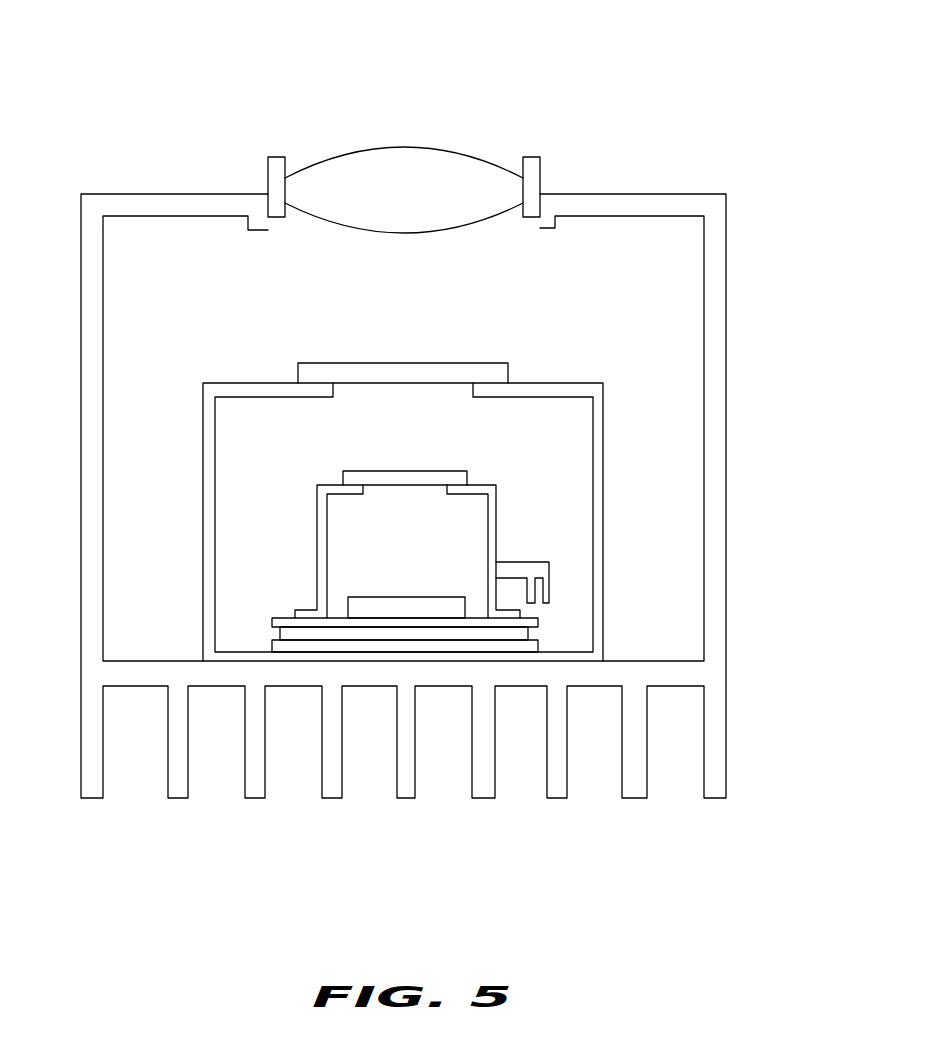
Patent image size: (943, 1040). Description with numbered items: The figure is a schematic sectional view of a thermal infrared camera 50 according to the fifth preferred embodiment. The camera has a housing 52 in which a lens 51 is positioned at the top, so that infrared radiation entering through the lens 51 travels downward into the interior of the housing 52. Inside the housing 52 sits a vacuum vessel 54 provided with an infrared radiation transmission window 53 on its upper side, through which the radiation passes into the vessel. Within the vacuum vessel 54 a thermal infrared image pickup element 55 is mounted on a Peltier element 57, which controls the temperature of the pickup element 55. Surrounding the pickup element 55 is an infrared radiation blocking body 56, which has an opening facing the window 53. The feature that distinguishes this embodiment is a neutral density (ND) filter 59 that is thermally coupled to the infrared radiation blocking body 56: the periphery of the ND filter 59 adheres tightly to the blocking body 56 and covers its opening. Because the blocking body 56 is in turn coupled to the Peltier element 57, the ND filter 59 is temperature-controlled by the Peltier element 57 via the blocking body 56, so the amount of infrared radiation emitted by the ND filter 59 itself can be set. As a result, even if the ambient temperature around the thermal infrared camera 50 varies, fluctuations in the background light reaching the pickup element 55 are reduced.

The thermal infrared camera 50 is at (709, 74).
The lens 51 is at (468, 172).
The housing 52 is at (718, 240).
The infrared radiation transmission window 53 is at (497, 373).
The vacuum vessel 54 is at (597, 447).
The thermal infrared image pickup element 55 is at (438, 590).
The infrared radiation blocking body 56 is at (492, 522).
The Peltier element 57 is at (517, 632).
The neutral density (ND) filter 59 is at (465, 478).